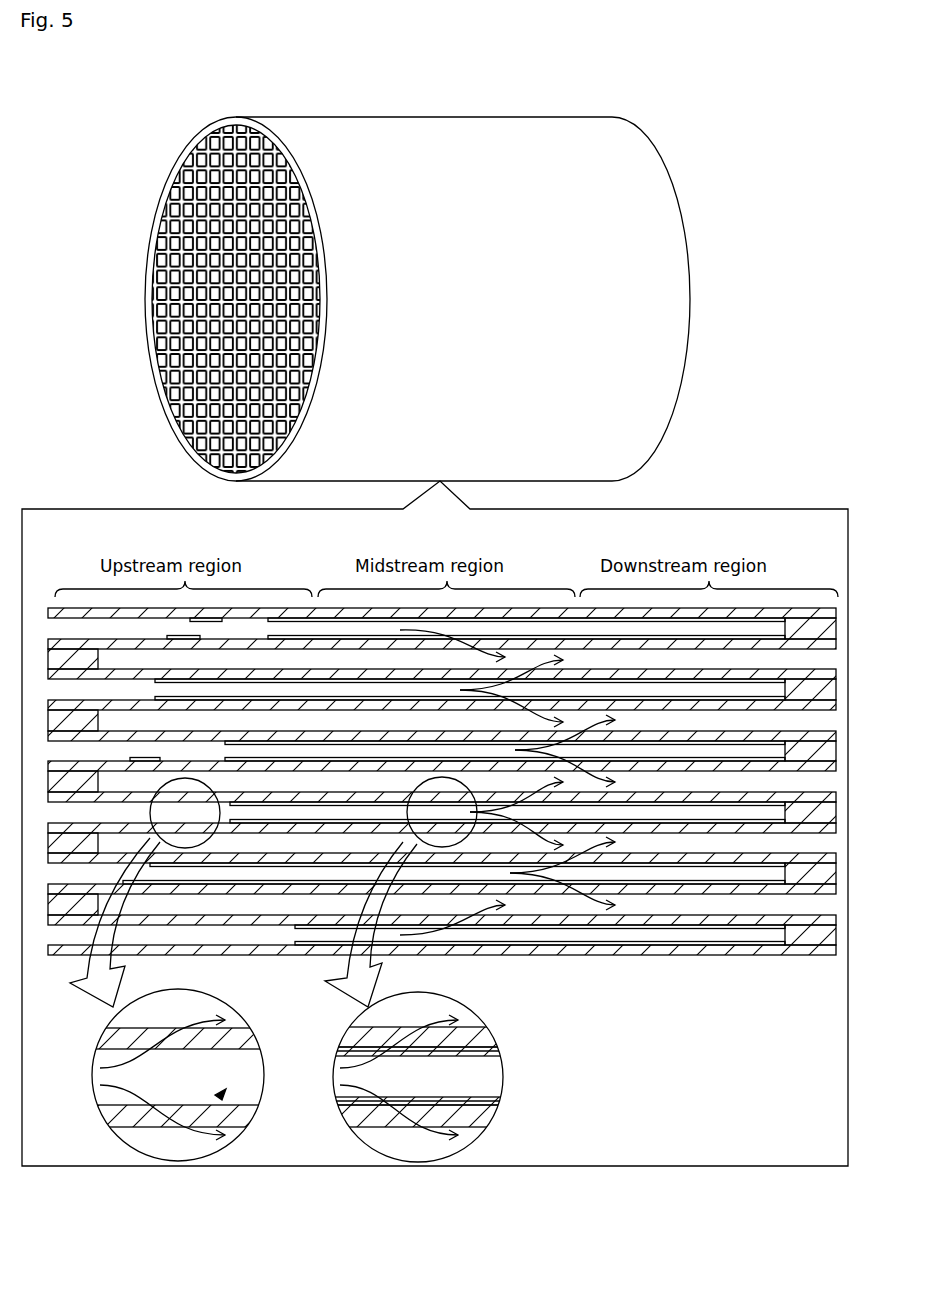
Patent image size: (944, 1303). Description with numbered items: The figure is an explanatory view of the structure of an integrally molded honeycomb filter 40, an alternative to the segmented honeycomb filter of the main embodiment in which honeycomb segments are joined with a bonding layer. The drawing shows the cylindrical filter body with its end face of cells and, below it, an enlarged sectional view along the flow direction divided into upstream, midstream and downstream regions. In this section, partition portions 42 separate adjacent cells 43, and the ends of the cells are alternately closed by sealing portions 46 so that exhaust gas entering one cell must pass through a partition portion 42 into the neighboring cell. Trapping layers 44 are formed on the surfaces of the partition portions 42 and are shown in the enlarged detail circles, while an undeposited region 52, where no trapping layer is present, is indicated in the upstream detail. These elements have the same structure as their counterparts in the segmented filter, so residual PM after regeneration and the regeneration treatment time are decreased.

The honeycomb filter 40 is at (705, 98).
The partition portion 42 is at (264, 956).
The cell 43 is at (240, 1059).
The trapping layer 44 is at (299, 953).
The sealing portion 46 is at (176, 208).
The undeposited region 52 is at (222, 1095).